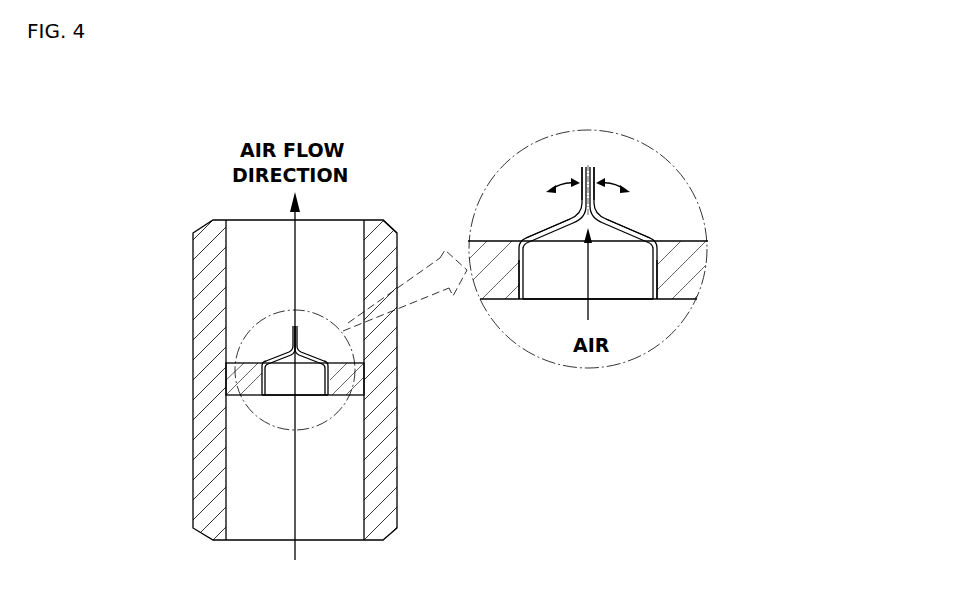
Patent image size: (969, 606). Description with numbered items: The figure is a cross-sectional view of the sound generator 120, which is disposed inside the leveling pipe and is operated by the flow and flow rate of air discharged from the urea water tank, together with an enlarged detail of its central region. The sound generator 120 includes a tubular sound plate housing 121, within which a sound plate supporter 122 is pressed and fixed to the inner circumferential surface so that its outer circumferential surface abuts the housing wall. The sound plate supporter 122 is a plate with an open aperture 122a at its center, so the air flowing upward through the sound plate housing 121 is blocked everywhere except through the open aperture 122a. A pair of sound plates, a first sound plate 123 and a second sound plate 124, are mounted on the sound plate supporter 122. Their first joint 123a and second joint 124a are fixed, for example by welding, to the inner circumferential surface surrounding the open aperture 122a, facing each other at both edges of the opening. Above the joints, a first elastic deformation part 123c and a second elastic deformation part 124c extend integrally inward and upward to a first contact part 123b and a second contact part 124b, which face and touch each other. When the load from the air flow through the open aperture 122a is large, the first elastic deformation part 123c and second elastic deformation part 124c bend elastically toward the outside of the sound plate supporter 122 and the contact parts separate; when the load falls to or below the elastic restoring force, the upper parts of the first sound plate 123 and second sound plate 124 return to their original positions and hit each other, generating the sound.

The sound generator 120 is at (191, 202).
The sound plate housing 121 is at (383, 221).
The sound plate supporter 122 is at (348, 381).
The open aperture 122a is at (317, 387).
The first sound plate 123 is at (276, 355).
The second sound plate 124 is at (314, 357).
The first joint 123a is at (522, 288).
The second joint 124a is at (653, 288).
The first contact part 123b is at (583, 173).
The second contact part 124b is at (592, 173).
The first elastic deformation part 123c is at (541, 228).
The second elastic deformation part 124c is at (625, 228).